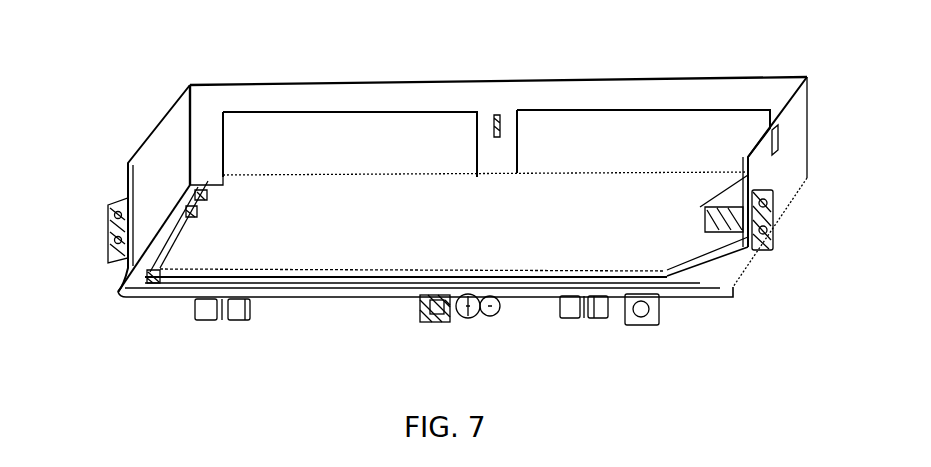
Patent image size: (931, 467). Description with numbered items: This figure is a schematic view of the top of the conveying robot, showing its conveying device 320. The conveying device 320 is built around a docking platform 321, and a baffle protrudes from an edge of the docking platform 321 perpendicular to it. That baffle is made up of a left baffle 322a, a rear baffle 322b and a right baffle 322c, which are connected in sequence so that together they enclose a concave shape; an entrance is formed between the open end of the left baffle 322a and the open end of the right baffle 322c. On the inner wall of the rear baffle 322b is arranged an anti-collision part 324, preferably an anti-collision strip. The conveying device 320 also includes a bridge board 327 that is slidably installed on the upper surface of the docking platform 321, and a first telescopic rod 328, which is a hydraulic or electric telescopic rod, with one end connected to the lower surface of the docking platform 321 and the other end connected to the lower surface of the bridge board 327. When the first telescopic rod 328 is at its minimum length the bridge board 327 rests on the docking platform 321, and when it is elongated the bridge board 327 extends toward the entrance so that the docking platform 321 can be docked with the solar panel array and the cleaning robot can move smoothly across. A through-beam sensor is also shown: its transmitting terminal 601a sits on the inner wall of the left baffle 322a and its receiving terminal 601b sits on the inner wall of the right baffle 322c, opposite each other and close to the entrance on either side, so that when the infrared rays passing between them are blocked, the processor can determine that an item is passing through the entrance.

The conveying device 320 is at (163, 52).
The docking platform 321 is at (718, 272).
The left baffle 322a is at (172, 132).
The rear baffle 322b is at (728, 88).
The right baffle 322c is at (785, 180).
The anti-collision part 324 is at (365, 127).
The bridge board 327 is at (332, 252).
The first telescopic rod 328 is at (425, 325).
The transmitting terminal 601a is at (115, 213).
The receiving terminal 601b is at (763, 237).